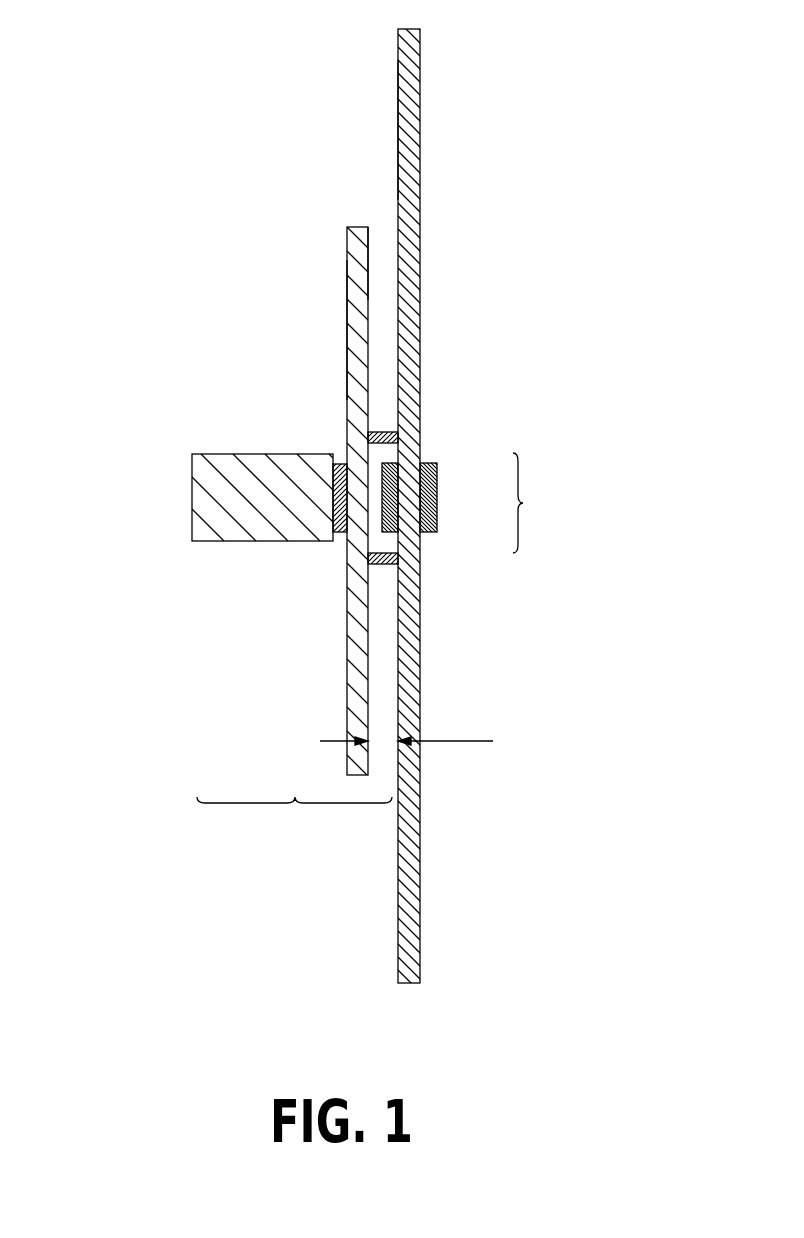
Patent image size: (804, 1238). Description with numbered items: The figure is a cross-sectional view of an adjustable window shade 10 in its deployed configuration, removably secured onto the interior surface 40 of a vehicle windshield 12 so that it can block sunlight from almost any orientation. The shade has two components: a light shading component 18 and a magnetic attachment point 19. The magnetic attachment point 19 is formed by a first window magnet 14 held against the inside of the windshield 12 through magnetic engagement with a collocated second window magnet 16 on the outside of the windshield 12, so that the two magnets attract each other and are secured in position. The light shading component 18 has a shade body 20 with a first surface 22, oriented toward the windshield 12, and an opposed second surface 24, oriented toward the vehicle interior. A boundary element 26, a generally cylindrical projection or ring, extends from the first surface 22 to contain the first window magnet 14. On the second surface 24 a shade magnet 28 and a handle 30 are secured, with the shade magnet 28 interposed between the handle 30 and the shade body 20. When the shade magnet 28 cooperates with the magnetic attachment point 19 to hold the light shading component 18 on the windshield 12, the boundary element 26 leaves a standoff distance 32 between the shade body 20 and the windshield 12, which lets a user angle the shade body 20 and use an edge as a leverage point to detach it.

The adjustable window shade 10 is at (112, 236).
The windshield 12 is at (419, 45).
The first window magnet 14 is at (391, 532).
The second window magnet 16 is at (430, 463).
The light shading component 18 is at (294, 817).
The magnetic attachment point 19 is at (537, 503).
The shade body 20 is at (347, 232).
The first surface 22 is at (368, 250).
The second surface 24 is at (347, 322).
The boundary element 26 is at (387, 432).
The shade magnet 28 is at (343, 541).
The handle 30 is at (235, 454).
The standoff distance 32 is at (458, 741).
The interior surface 40 is at (398, 108).